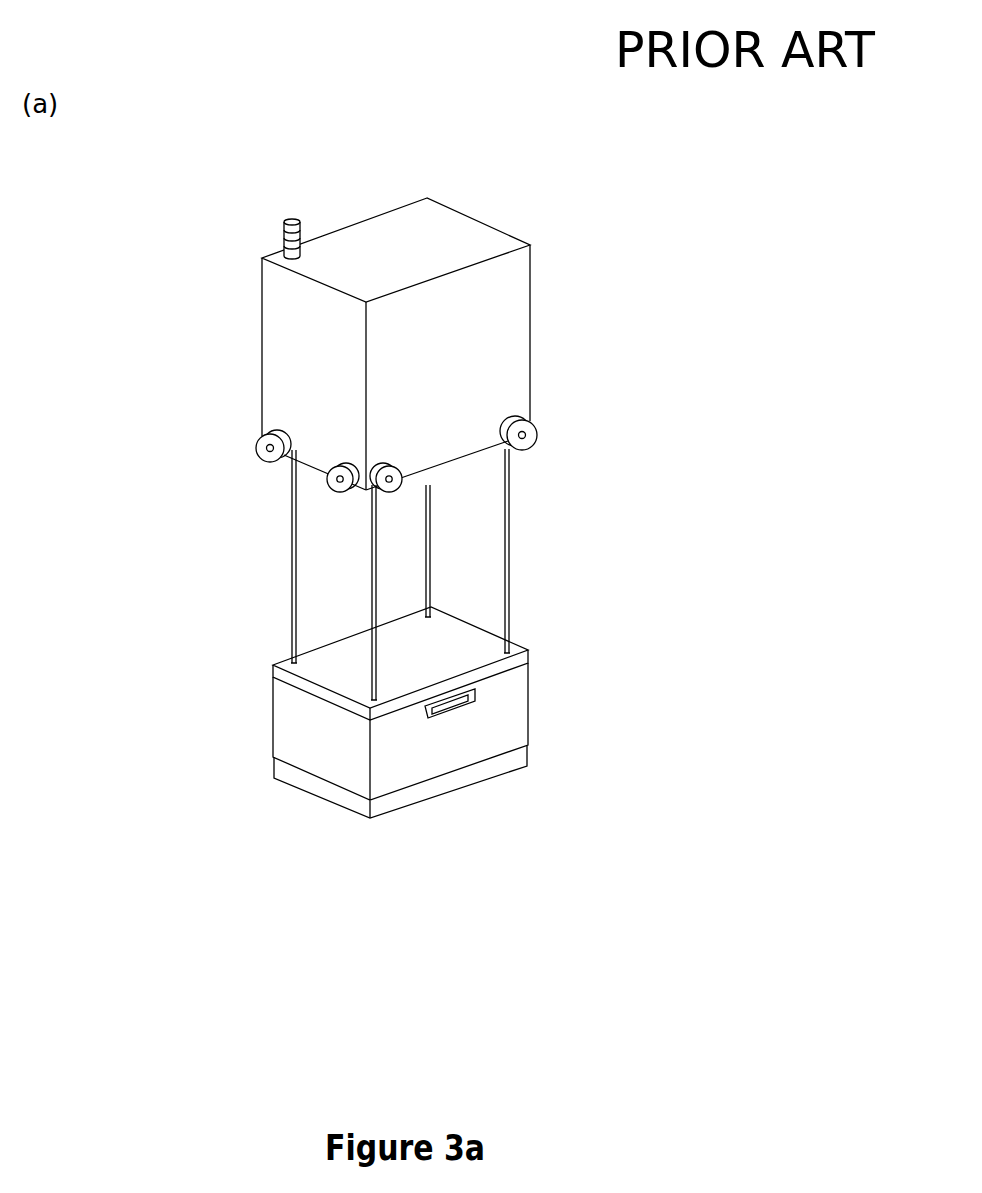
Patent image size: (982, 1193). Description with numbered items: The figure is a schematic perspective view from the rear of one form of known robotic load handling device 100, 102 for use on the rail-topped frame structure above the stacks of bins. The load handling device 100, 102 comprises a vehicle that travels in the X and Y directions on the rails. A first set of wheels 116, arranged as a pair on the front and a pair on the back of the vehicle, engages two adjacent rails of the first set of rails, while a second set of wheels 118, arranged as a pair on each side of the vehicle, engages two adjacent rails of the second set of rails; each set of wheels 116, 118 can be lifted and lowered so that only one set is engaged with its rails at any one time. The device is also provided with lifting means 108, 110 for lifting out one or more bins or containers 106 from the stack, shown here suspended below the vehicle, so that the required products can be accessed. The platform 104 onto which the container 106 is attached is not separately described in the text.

The load handling device 100 is at (233, 160).
The load handling device 102 is at (396, 345).
The platform 104 is at (443, 635).
The bin or container 106 is at (502, 733).
The lifting means 108 is at (293, 578).
The lifting means 110 is at (323, 693).
The first set of wheels 116 is at (532, 441).
The second set of wheels 118 is at (257, 437).